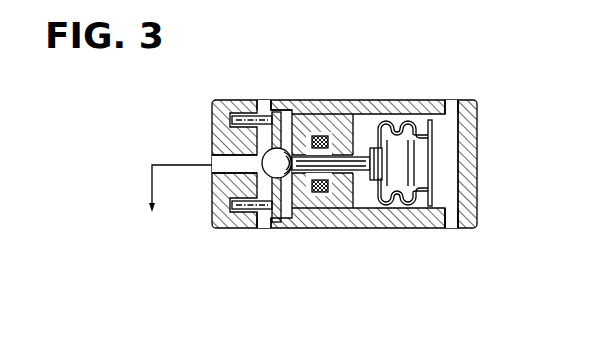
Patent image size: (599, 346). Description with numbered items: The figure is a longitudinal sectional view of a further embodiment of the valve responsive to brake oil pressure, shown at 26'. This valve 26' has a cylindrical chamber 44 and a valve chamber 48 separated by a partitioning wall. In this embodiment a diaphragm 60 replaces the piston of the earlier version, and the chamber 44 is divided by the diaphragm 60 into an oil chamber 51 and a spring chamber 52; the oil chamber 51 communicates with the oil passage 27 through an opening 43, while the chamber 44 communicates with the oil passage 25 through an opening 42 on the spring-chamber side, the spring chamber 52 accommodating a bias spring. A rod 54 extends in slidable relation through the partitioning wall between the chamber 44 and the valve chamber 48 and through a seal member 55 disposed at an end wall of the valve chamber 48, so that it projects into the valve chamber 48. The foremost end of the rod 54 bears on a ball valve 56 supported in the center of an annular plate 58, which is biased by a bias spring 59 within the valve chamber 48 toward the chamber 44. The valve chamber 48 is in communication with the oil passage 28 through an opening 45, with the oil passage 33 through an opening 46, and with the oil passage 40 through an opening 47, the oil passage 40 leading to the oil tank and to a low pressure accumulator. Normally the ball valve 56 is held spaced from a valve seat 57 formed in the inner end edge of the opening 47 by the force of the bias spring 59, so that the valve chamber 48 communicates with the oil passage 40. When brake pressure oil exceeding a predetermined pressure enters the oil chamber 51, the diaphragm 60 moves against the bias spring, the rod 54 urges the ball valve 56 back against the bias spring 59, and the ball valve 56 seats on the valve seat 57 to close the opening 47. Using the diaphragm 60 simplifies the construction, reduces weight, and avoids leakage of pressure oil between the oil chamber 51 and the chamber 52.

The oil passage 25 is at (453, 240).
The valve responsive to brake oil pressure 26' is at (344, 137).
The oil passage 27 is at (450, 98).
The oil passage 28 is at (263, 240).
The oil passage 33 is at (262, 98).
The oil passage 40 is at (175, 205).
The opening 42 is at (456, 228).
The opening 43 is at (454, 104).
The cylindrical chamber 44 is at (402, 229).
The opening 45 is at (259, 229).
The opening 46 is at (265, 101).
The opening 47 is at (226, 174).
The valve chamber 48 is at (290, 183).
The oil chamber 51 is at (452, 169).
The spring chamber 52 is at (362, 229).
The rod 54 is at (330, 129).
The seal member 55 is at (322, 192).
The ball valve 56 is at (286, 146).
The valve seat 57 is at (268, 147).
The annular plate 58 is at (285, 229).
The bias spring 59 is at (236, 106).
The diaphragm 60 is at (445, 161).